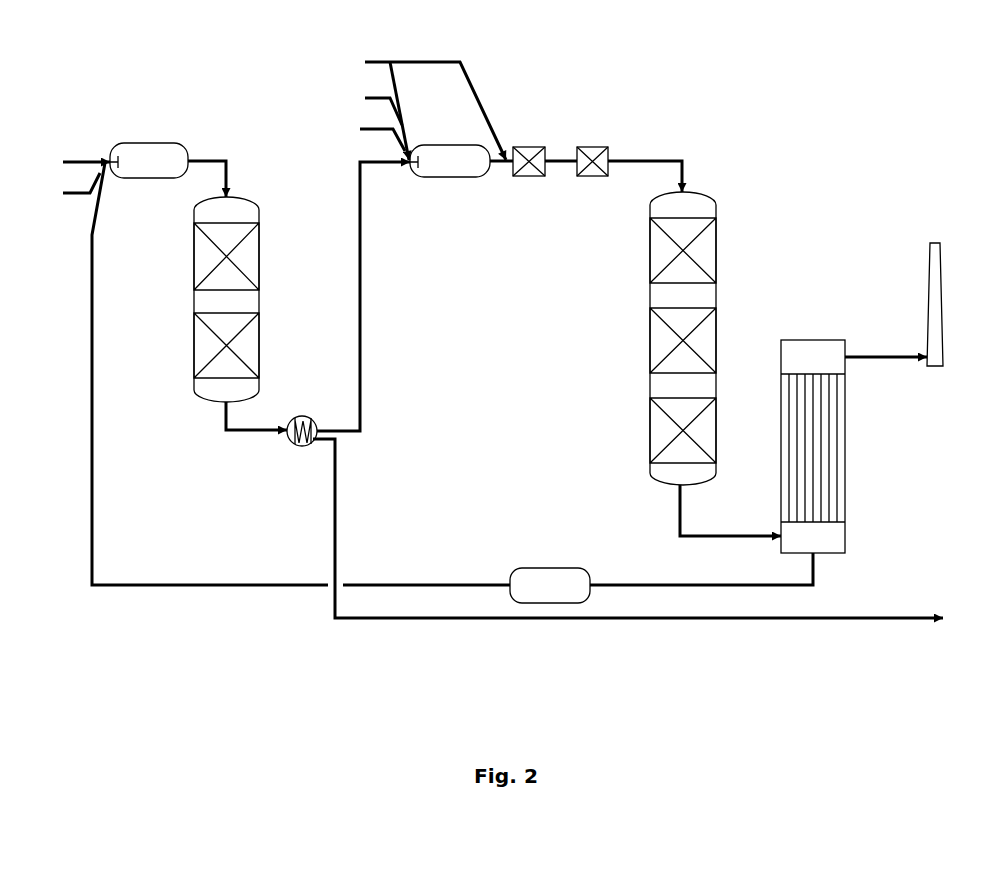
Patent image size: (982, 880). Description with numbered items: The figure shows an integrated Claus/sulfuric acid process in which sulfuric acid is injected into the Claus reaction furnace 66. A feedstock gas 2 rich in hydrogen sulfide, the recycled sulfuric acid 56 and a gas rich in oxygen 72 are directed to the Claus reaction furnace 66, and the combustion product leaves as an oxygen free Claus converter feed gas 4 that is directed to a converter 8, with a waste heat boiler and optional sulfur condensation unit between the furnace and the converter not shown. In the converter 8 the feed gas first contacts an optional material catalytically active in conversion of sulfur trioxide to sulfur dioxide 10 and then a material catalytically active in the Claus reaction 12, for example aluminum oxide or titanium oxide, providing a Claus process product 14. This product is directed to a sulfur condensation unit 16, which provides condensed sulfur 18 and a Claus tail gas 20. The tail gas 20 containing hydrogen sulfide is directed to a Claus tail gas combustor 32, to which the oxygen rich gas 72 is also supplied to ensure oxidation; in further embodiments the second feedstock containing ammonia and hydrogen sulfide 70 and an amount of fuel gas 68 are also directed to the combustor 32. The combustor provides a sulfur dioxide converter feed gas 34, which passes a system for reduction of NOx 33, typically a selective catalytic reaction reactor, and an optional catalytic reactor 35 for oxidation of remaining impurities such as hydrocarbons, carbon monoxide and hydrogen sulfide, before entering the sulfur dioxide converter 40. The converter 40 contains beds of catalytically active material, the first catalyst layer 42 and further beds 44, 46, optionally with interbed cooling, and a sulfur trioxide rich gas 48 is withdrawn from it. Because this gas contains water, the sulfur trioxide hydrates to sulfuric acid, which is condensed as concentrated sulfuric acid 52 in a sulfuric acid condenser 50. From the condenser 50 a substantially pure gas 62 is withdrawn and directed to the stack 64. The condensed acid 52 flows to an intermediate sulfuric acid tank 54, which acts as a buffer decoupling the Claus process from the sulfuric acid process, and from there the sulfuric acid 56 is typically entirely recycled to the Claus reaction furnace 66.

The feedstock gas 2 is at (85, 160).
The gas rich in oxygen 72 is at (81, 179).
The Claus reaction furnace 66 is at (138, 143).
The O2 free Claus converter feed gas 4 is at (228, 185).
The converter 8 is at (261, 206).
The material catalytically active in conversion of SO3 to SO2 10 is at (259, 258).
The material catalytically active in the Claus reaction 12 is at (263, 340).
The Claus process product 14 is at (226, 425).
The sulfur condensation unit 16 is at (306, 416).
The Claus tail gas 20 is at (339, 430).
The condensed sulfur 18 is at (337, 501).
The second feedstock containing NH3 and H2S 70 is at (375, 62).
The fuel gas 68 is at (375, 98).
The Claus tail gas combustor 32 is at (442, 145).
The system for reduction of NOx 33 is at (529, 147).
The catalytic reactor 35 is at (597, 147).
The SO2 converter feed gas 34 is at (669, 160).
The SO2 converter 40 is at (717, 200).
The first catalyst layer 42 is at (717, 250).
The bed of catalytically active material 44 is at (717, 330).
The bed of catalytically active material 46 is at (717, 428).
The SO3 rich gas 48 is at (735, 535).
The sulfuric acid condenser 50 is at (846, 436).
The substantially pure gas 62 is at (878, 357).
The stack 64 is at (928, 270).
The concentrated sulfuric acid 52 is at (814, 575).
The intermediate sulfuric acid tank 54 is at (590, 568).
The sulfuric acid 56 is at (93, 540).